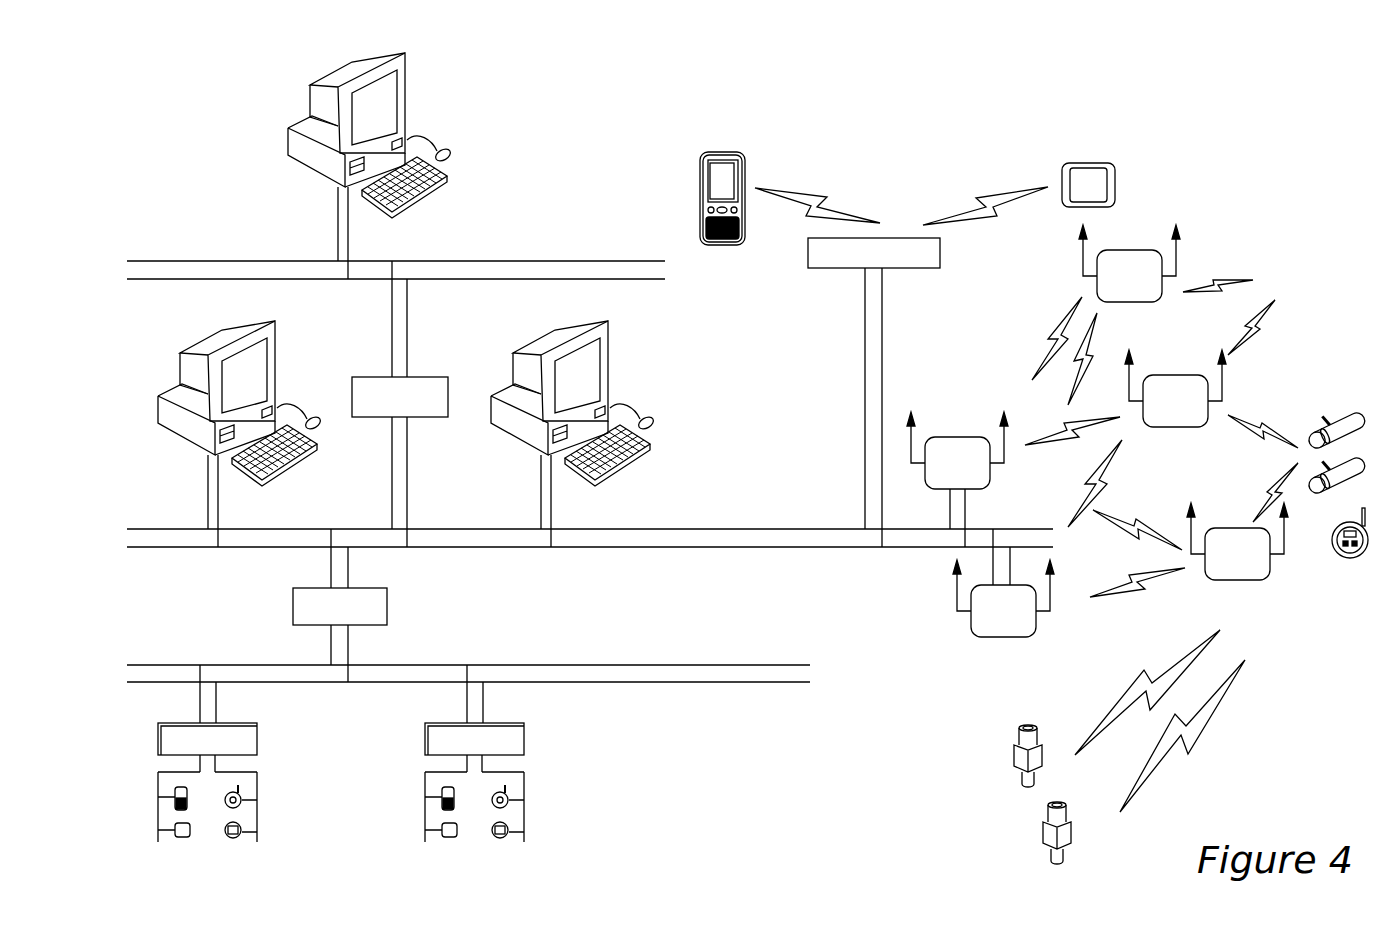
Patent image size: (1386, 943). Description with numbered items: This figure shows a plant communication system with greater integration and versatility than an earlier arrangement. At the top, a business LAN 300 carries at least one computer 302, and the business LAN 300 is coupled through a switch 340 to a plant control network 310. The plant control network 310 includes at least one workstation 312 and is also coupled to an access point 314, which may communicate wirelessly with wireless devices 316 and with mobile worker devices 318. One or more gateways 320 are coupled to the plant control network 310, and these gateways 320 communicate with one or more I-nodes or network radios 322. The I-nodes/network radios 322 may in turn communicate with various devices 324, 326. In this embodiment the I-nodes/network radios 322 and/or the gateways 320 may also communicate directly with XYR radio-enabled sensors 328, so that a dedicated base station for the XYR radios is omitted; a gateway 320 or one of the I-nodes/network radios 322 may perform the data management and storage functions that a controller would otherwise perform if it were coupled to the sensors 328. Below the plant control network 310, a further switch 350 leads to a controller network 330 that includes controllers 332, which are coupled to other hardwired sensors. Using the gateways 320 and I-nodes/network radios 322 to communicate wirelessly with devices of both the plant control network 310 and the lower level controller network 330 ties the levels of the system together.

The business LAN 300 is at (567, 261).
The computer 302 is at (407, 93).
The plant control network 310 is at (632, 548).
The workstation 312 is at (272, 360).
The access point 314 is at (915, 268).
The wireless device 316 is at (723, 152).
The mobile worker device 318 is at (1088, 163).
The gateway 320 is at (958, 437).
The I-node or network radio 322 is at (1145, 250).
The device 324 is at (1347, 413).
The device 326 is at (1350, 558).
The XYR radio-enabled sensor 328 is at (1043, 828).
The controller network 330 is at (742, 665).
The controller 332 is at (257, 731).
The switch 340 is at (430, 377).
The switch 350 is at (387, 607).